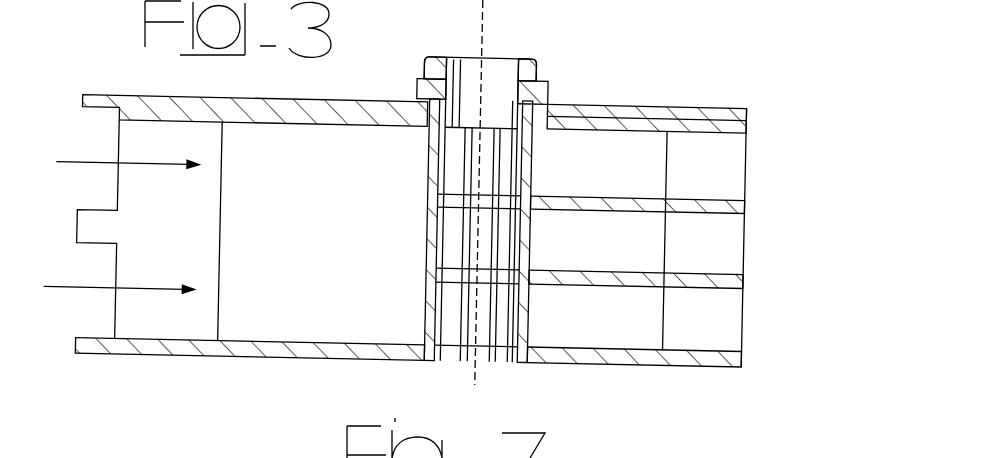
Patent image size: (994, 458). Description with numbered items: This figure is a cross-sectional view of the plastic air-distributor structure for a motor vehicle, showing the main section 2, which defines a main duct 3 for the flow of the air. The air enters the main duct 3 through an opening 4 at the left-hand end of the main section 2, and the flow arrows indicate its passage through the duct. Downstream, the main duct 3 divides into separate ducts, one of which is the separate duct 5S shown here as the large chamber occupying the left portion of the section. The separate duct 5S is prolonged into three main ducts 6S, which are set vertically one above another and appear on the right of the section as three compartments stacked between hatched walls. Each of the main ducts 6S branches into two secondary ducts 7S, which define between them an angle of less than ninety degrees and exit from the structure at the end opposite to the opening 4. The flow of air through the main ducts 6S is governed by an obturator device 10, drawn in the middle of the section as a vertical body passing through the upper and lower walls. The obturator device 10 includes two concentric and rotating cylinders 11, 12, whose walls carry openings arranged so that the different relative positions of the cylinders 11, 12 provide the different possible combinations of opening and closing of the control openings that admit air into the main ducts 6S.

The main section 2 is at (154, 370).
The main duct 3 is at (133, 155).
The opening 4 is at (102, 346).
The separate duct 5S is at (261, 314).
The main ducts 6S is at (564, 173).
The secondary ducts 7S is at (708, 153).
The obturator device 10 is at (509, 194).
The cylinder 11 is at (430, 58).
The cylinder 12 is at (417, 100).